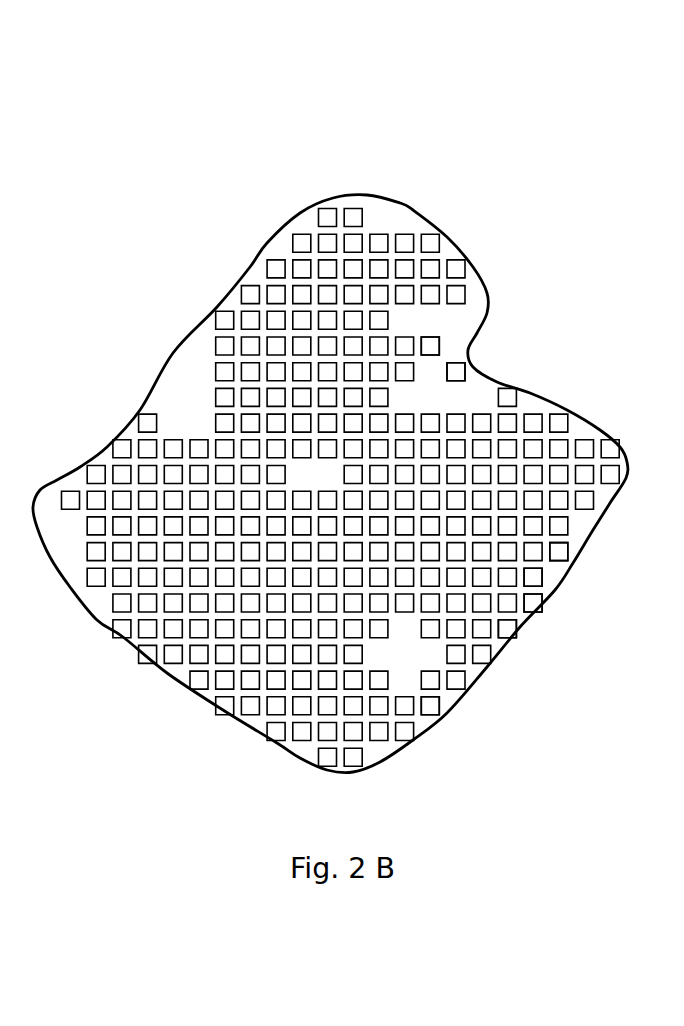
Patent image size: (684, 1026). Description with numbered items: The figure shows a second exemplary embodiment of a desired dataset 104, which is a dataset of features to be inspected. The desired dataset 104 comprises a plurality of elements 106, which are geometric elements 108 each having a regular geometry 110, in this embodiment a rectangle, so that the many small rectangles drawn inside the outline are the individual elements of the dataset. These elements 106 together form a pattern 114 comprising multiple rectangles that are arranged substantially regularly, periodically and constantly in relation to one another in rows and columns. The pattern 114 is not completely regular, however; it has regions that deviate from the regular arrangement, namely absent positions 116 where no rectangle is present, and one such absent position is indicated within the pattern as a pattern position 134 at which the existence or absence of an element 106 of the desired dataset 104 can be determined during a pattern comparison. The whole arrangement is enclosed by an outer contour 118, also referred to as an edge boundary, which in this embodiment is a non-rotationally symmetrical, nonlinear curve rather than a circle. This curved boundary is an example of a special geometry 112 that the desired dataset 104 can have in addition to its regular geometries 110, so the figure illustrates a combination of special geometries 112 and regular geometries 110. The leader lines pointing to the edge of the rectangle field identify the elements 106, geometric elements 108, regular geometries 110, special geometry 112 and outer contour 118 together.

The desired dataset 104 is at (351, 165).
The pattern 114 is at (586, 187).
The absent positions 116 is at (462, 327).
The pattern position 134 is at (522, 306).
The elements 106 is at (535, 630).
The geometric elements 108 is at (580, 646).
The regular geometries 110 is at (430, 707).
The special geometry 112 is at (557, 650).
The outer contour 118 is at (591, 637).